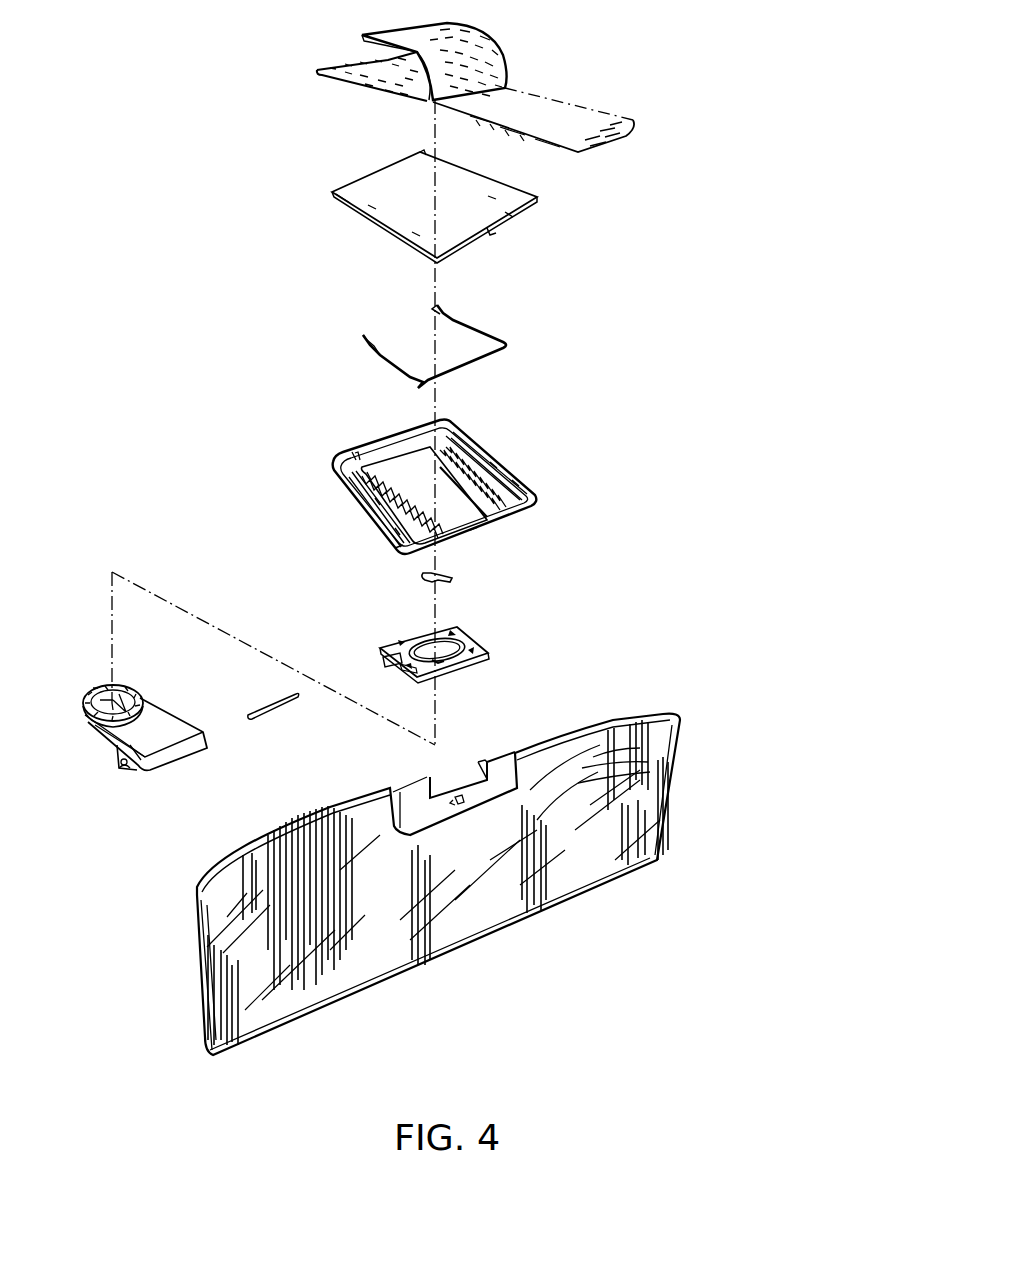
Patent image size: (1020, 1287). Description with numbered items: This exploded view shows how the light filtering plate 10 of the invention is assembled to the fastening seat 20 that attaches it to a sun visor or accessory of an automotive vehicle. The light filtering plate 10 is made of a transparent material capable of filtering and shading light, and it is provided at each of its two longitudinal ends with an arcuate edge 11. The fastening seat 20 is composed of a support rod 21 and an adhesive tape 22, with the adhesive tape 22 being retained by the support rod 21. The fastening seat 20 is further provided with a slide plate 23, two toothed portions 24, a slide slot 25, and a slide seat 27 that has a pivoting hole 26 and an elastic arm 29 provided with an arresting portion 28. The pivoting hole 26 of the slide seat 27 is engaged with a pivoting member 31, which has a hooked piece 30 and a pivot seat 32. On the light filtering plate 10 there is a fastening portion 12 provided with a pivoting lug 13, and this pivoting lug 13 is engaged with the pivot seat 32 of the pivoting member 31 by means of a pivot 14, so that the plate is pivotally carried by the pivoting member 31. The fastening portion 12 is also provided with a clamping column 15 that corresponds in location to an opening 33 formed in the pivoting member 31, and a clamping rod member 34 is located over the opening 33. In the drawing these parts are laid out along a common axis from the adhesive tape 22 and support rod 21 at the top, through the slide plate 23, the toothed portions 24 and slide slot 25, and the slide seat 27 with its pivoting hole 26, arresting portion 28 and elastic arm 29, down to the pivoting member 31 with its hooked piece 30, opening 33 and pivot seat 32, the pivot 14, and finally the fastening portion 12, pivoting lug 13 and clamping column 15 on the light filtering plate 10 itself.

The light filtering plate 10 is at (463, 858).
The arcuate edge 11 is at (667, 714).
The fastening portion 12 is at (410, 793).
The pivoting lug 13 is at (483, 760).
The pivot 14 is at (280, 707).
The clamping column 15 is at (537, 820).
The fastening seat 20 is at (409, 462).
The support rod 21 is at (510, 348).
The adhesive tape 22 is at (350, 75).
The slide plate 23 is at (510, 203).
The toothed portions 24 is at (513, 517).
The slide slot 25 is at (470, 485).
The pivoting hole 26 is at (435, 651).
The slide seat 27 is at (473, 667).
The arresting portion 28 is at (386, 663).
The elastic arm 29 is at (402, 670).
The hooked piece 30 is at (157, 729).
The pivoting member 31 is at (170, 727).
The pivot seat 32 is at (120, 765).
The opening 33 is at (97, 687).
The clamping rod member 34 is at (453, 580).